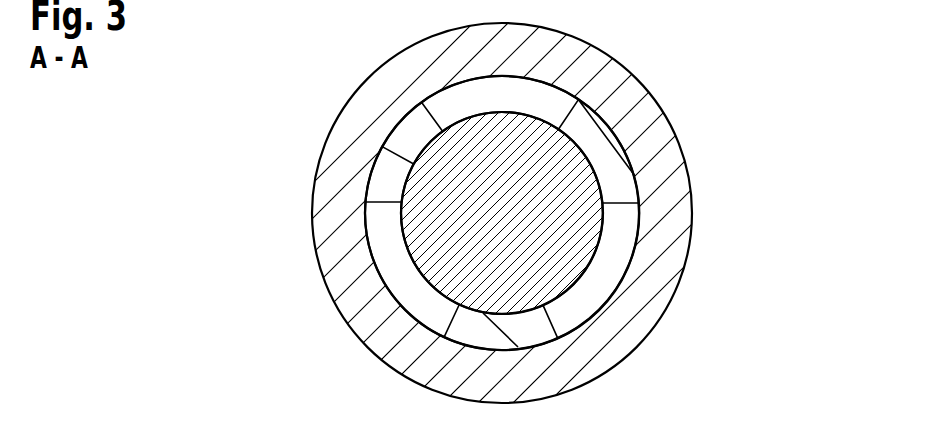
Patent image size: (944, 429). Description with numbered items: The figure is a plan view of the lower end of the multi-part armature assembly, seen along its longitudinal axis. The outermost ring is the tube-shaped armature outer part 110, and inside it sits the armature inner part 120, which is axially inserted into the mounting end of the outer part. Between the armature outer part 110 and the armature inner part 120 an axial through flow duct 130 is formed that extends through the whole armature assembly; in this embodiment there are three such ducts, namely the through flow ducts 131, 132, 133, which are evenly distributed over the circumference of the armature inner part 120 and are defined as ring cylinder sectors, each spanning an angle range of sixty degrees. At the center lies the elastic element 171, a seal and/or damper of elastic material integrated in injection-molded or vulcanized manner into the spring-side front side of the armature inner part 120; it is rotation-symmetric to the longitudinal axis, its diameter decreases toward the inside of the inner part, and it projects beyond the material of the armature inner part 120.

The armature outer part 110 is at (342, 243).
The armature inner part 120 is at (412, 132).
The through flow duct 130 is at (626, 213).
The through flow duct 131 is at (500, 95).
The through flow duct 132 is at (398, 273).
The through flow duct 133 is at (603, 277).
The elastic element 171 is at (515, 274).